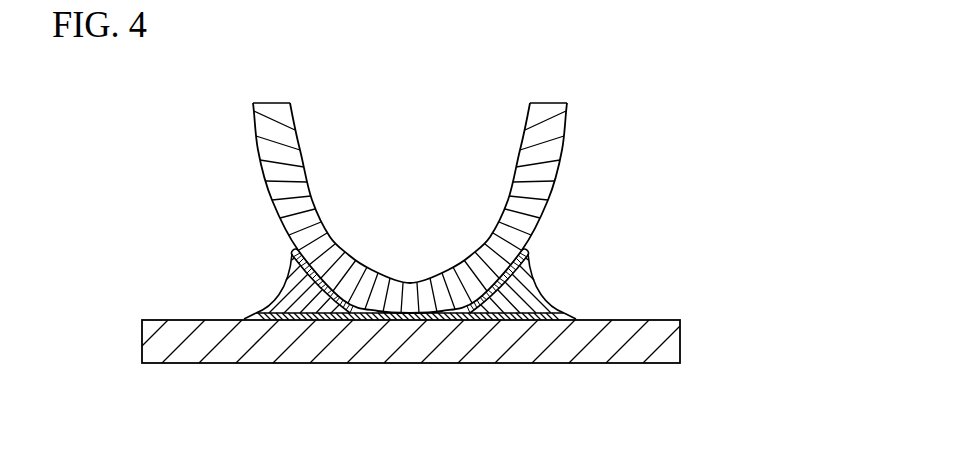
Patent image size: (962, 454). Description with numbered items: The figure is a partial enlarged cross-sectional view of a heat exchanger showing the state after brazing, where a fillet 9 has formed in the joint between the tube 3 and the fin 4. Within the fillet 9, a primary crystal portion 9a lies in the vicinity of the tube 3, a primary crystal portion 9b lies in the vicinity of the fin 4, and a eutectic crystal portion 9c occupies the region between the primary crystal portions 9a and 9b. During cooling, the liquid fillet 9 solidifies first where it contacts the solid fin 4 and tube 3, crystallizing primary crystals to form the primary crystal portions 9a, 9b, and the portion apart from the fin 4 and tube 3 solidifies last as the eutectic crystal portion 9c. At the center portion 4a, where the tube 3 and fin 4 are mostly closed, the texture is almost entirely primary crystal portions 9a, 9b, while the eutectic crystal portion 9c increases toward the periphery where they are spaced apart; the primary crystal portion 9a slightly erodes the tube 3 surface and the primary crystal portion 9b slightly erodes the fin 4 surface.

The tube 3 is at (618, 340).
The fin 4 is at (553, 127).
The center portion 4a is at (408, 282).
The fillet 9 is at (233, 258).
The primary crystal portion 9a is at (278, 313).
The primary crystal portion 9b is at (299, 253).
The eutectic crystal portion 9c is at (303, 297).